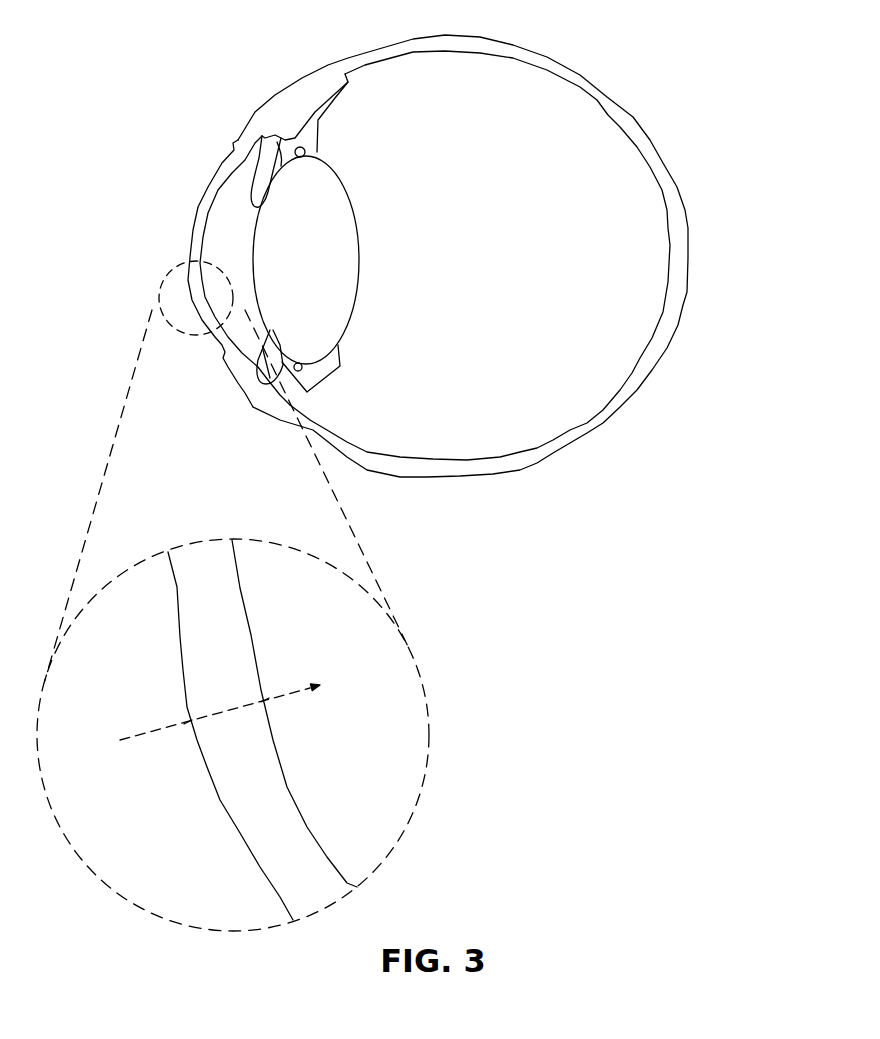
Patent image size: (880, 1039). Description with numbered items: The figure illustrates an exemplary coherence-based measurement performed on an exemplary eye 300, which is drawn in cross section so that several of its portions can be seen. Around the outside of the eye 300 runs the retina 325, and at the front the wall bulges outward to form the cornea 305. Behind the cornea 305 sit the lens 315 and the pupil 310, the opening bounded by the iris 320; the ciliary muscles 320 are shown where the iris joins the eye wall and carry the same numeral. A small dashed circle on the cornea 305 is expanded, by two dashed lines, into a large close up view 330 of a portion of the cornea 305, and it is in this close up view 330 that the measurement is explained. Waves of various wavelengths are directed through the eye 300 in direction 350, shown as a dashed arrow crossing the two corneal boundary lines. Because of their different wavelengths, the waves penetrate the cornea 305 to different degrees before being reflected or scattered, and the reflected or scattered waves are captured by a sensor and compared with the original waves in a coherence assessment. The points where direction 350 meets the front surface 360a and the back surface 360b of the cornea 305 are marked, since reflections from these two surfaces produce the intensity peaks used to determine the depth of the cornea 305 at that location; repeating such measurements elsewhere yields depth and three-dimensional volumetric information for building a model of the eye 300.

The eye 300 is at (116, 45).
The cornea 305 is at (330, 810).
The pupil 310 is at (254, 248).
The lens 315 is at (319, 281).
The iris 320 is at (362, 480).
The retina 325 is at (670, 248).
The close up view 330 is at (433, 713).
The direction 350 is at (150, 745).
The front surface 360a is at (188, 722).
The back surface 360b is at (265, 700).